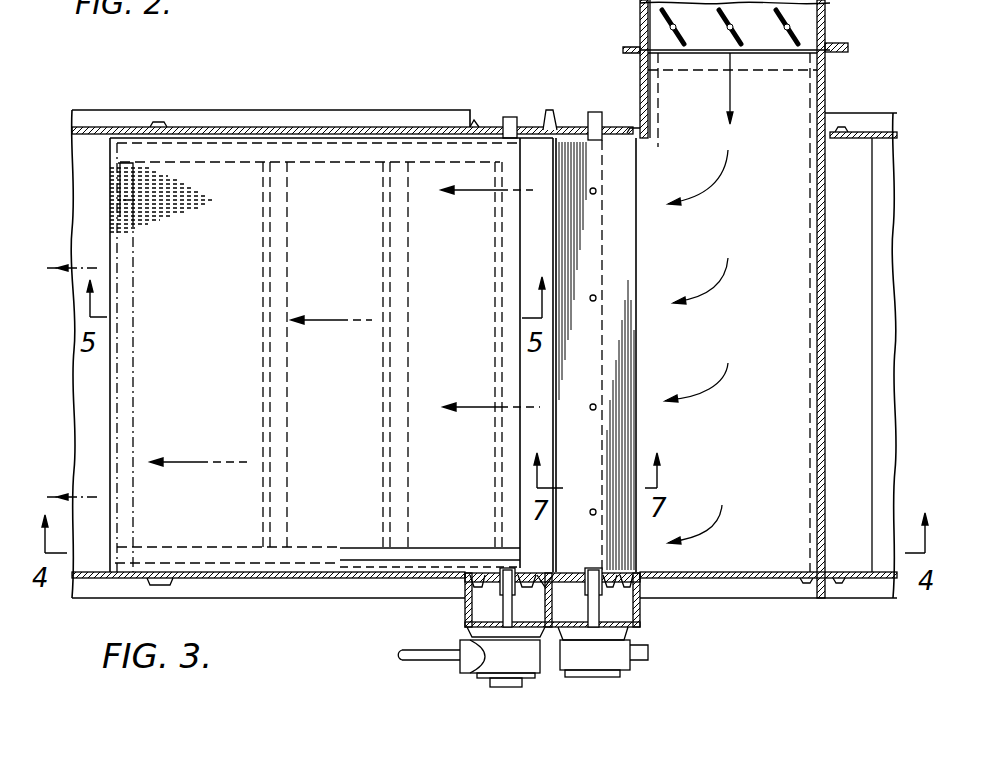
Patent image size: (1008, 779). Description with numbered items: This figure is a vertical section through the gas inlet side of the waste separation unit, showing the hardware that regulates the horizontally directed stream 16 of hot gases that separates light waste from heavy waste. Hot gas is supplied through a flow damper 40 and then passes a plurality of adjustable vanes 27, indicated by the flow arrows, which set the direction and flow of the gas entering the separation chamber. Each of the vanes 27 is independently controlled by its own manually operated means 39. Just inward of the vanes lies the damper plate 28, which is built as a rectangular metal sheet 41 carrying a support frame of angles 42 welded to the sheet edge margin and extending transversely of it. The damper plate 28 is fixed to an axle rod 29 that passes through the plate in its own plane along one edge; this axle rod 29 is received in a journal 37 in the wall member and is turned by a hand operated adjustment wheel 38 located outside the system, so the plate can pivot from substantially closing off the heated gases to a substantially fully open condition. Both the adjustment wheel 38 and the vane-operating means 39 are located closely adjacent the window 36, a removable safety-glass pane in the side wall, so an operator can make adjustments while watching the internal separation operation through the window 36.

The horizontally directed stream of hot gases 16 is at (530, 188).
The adjustable vanes 27 is at (613, 343).
The damper plate 28 is at (210, 323).
The axle rod 29 is at (505, 608).
The second window 36 is at (103, 124).
The journal 37 is at (465, 587).
The hand operated adjustment wheel 38 is at (425, 657).
The manually operated means 39 is at (648, 650).
The flow damper 40 is at (655, 39).
The rectangular metal sheet 41 is at (157, 205).
The angles 42 is at (133, 217).